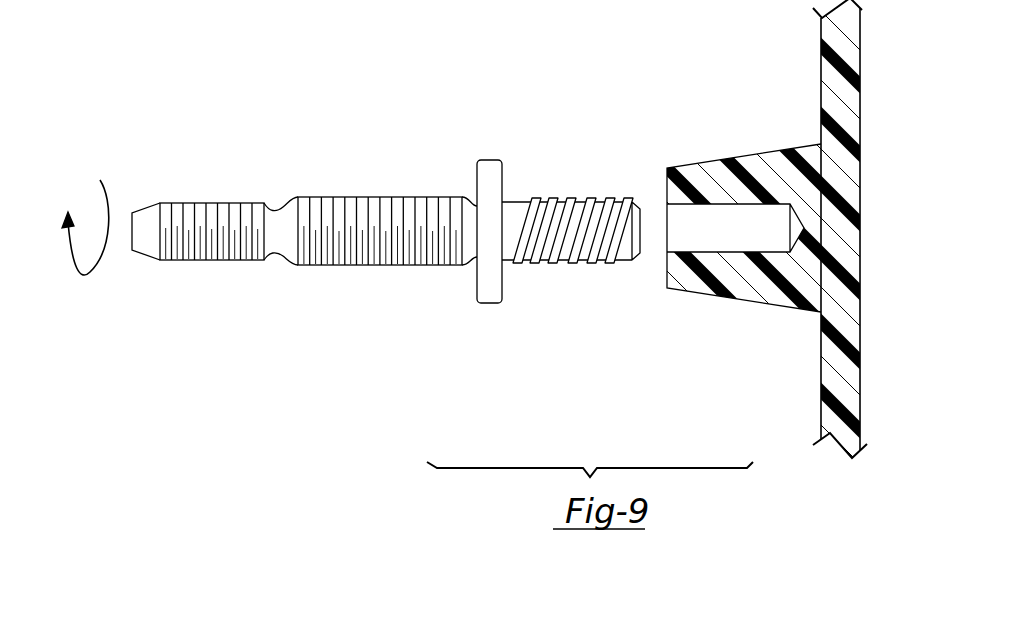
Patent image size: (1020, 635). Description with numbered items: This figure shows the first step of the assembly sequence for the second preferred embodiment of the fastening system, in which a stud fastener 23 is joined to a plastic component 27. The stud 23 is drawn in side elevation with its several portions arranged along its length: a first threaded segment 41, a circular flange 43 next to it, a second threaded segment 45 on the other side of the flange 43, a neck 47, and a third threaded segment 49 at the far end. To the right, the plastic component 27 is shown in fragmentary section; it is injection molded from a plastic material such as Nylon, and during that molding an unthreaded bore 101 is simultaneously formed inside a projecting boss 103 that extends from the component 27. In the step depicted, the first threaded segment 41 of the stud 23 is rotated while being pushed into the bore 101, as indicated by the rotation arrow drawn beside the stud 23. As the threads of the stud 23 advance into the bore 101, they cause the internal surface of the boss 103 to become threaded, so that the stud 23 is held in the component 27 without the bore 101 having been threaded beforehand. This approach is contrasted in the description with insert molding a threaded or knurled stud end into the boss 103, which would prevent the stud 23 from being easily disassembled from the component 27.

The stud fastener 23 is at (346, 105).
The third threaded segment 49 is at (200, 207).
The neck 47 is at (277, 245).
The second threaded segment 45 is at (370, 207).
The circular flange 43 is at (492, 182).
The first threaded segment 41 is at (575, 200).
The projecting boss 103 is at (700, 175).
The unthreaded bore 101 is at (755, 205).
The plastic component 27 is at (832, 79).